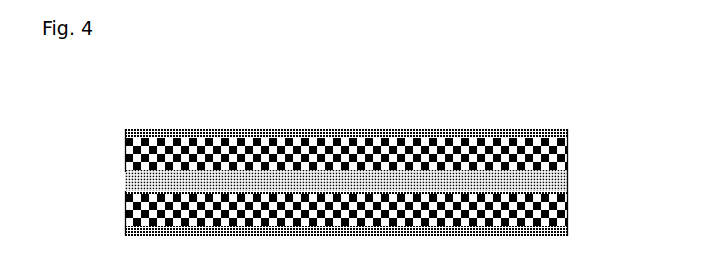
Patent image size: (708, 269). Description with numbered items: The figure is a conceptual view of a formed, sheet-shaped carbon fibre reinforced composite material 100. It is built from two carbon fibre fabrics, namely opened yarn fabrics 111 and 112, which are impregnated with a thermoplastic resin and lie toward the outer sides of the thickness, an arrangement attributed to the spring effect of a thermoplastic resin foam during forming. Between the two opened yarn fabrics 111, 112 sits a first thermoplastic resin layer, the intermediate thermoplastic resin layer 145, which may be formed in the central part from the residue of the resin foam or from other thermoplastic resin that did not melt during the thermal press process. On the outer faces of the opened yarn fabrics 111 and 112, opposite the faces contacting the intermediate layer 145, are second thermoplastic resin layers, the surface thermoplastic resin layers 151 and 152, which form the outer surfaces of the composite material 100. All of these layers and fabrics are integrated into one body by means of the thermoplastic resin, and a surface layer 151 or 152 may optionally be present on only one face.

The carbon fibre reinforced composite material 100 is at (372, 67).
The carbon fibre fabric 111 is at (568, 157).
The carbon fibre fabric 112 is at (568, 212).
The first thermoplastic resin layer 145 is at (568, 180).
The second thermoplastic resin layer 151 is at (125, 130).
The second thermoplastic resin layer 152 is at (125, 237).